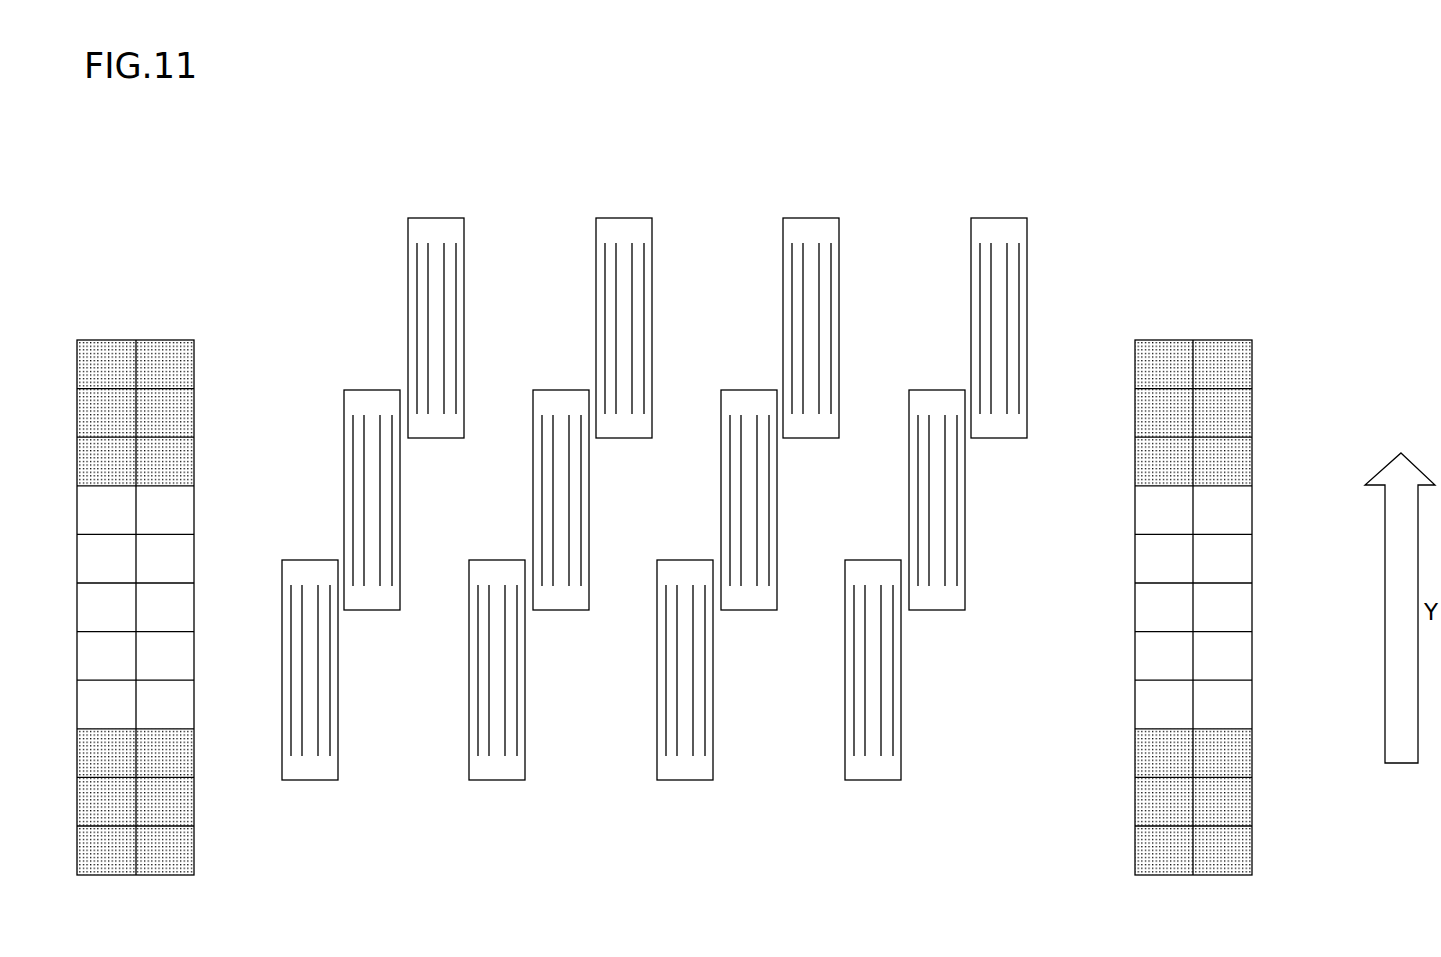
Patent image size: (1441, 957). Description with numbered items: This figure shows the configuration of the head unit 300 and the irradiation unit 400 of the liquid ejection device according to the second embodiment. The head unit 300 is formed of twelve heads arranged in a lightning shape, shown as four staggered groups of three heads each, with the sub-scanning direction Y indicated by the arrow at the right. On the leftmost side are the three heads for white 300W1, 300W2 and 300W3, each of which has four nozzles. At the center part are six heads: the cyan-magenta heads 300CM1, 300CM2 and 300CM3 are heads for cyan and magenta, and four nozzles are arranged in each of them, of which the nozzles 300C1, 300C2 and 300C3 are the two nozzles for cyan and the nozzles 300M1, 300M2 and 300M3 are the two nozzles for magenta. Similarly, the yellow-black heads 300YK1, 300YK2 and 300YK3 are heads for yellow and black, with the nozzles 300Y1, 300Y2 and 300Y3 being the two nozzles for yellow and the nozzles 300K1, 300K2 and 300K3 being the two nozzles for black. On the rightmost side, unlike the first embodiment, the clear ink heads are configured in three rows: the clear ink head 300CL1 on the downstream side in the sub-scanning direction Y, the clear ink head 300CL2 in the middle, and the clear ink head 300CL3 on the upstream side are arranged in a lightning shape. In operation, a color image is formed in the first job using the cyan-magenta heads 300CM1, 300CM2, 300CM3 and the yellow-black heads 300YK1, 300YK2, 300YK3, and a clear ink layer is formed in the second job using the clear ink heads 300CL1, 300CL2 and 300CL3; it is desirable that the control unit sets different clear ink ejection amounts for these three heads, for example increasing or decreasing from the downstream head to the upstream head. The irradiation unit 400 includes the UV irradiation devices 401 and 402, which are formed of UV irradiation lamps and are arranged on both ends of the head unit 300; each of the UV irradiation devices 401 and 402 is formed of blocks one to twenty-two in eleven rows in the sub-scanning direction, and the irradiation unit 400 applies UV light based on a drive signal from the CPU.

The head unit 300 is at (708, 143).
The head for white 300W1 is at (408, 260).
The head for white 300W2 is at (344, 420).
The head for white 300W3 is at (298, 560).
The cyan-magenta head 300CM1 is at (621, 218).
The cyan-magenta head 300CM2 is at (545, 390).
The cyan-magenta head 300CM3 is at (483, 560).
The nozzles for cyan 300C1 is at (605, 258).
The nozzles for cyan 300C2 is at (542, 459).
The nozzles for cyan 300C3 is at (478, 636).
The nozzles for magenta 300M1 is at (643, 258).
The nozzles for magenta 300M2 is at (580, 455).
The nozzles for magenta 300M3 is at (517, 633).
The yellow-black head 300YK1 is at (809, 218).
The yellow-black head 300YK2 is at (734, 390).
The yellow-black head 300YK3 is at (672, 560).
The nozzles for yellow 300Y1 is at (783, 289).
The nozzles for yellow 300Y2 is at (728, 483).
The nozzles for yellow 300Y3 is at (665, 682).
The nozzles for black 300K1 is at (832, 258).
The nozzles for black 300K2 is at (769, 458).
The nozzles for black 300K3 is at (705, 634).
The clear ink head 300CL1 is at (999, 218).
The clear ink head 300CL2 is at (926, 390).
The clear ink head 300CL3 is at (860, 560).
The irradiation unit 400 is at (1170, 186).
The UV irradiation device 401 is at (154, 340).
The UV irradiation device 402 is at (1159, 340).